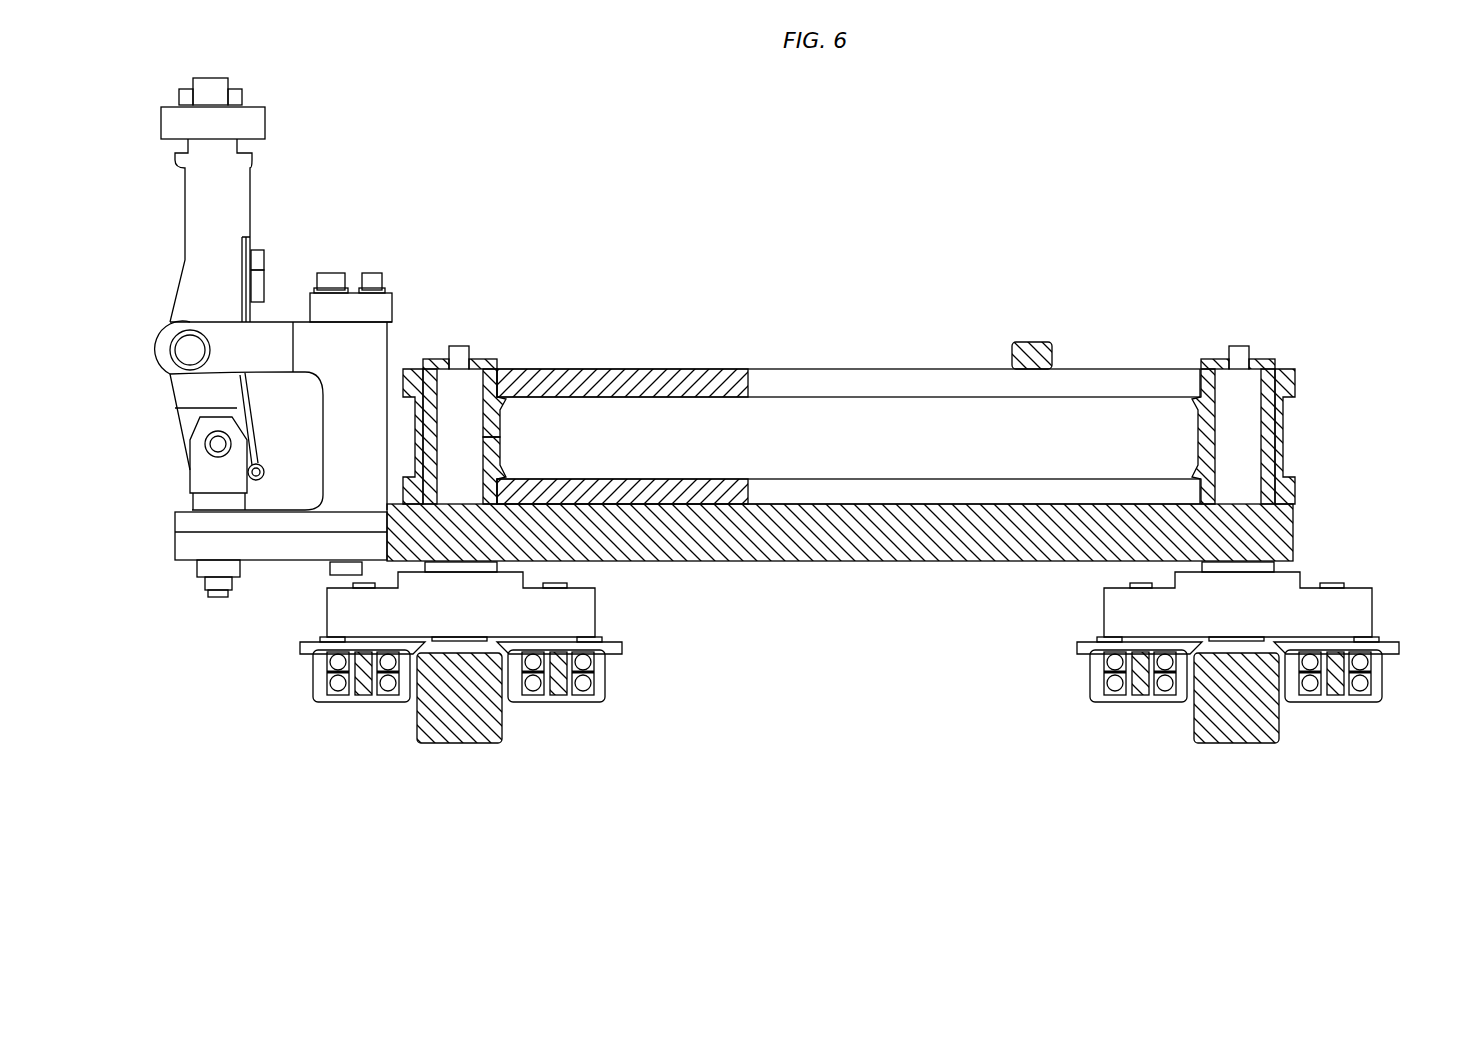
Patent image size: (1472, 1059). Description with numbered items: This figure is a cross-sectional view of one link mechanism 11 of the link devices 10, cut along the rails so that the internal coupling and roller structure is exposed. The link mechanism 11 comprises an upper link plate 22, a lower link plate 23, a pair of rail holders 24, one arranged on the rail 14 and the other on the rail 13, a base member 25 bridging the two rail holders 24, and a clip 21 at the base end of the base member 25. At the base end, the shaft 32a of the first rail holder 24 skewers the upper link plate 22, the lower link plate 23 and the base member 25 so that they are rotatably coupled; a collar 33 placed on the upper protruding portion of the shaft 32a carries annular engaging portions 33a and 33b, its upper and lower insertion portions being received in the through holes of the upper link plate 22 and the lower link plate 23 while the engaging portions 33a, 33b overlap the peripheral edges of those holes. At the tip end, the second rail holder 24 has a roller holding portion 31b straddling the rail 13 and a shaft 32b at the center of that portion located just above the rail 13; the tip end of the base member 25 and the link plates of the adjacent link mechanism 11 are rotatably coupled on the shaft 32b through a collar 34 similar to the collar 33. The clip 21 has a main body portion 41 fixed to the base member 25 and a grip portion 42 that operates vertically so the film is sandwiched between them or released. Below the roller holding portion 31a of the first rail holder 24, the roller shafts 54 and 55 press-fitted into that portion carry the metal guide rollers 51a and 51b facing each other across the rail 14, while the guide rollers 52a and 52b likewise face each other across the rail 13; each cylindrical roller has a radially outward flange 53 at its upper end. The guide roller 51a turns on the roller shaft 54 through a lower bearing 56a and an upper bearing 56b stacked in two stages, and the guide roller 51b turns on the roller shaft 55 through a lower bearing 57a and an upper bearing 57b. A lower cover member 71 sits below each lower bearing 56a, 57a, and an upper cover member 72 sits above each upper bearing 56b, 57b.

The link device 10 is at (640, 93).
The link mechanism 11 is at (841, 363).
The rail 13 is at (1239, 744).
The rail 14 is at (462, 744).
The clip 21 is at (246, 337).
The upper link plate 22 is at (832, 369).
The lower link plate 23 is at (884, 479).
The rail holder 24 is at (784, 577).
The base member 25 is at (838, 562).
The roller holding portion 31a is at (600, 586).
The roller holding portion 31b is at (1103, 590).
The shaft 32a is at (460, 346).
The shaft 32b is at (1238, 346).
The collar 33 is at (550, 436).
The engaging portion 33a is at (500, 402).
The engaging portion 33b is at (500, 474).
The collar 34 is at (1195, 436).
The main body portion 41 is at (175, 521).
The grip portion 42 is at (190, 473).
The guide roller 51a is at (322, 703).
The guide roller 51b is at (602, 703).
The guide roller 52a is at (1379, 703).
The guide roller 52b is at (1099, 703).
The flange 53 is at (305, 645).
The roller shaft 54 is at (362, 697).
The roller shaft 55 is at (560, 697).
The lower bearing 56a is at (320, 683).
The upper bearing 56b is at (320, 662).
The lower bearing 57a is at (605, 683).
The upper bearing 57b is at (605, 662).
The lower cover member 71 is at (392, 697).
The upper cover member 72 is at (328, 640).